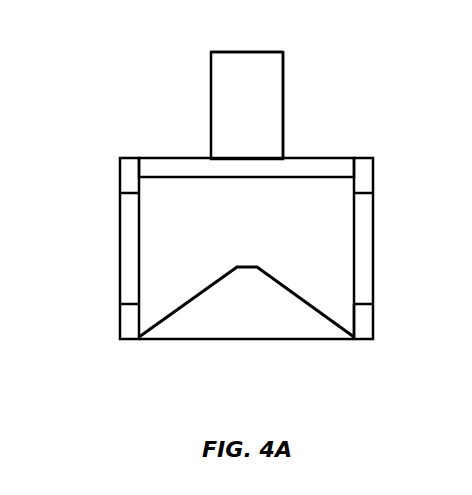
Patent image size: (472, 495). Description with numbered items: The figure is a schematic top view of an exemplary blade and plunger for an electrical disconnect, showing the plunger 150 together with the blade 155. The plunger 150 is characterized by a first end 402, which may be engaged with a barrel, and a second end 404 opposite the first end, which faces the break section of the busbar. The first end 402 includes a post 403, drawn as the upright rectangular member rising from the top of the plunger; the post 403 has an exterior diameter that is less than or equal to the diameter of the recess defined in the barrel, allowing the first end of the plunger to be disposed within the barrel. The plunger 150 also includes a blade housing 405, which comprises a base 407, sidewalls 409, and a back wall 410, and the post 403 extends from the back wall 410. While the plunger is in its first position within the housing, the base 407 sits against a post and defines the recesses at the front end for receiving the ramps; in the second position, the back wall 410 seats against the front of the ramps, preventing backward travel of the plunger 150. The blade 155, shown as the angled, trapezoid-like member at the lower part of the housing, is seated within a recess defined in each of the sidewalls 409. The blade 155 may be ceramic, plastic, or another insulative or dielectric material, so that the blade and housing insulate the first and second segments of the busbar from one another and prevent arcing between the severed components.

The plunger 150 is at (210, 145).
The blade 155 is at (183, 305).
The first end 402 is at (285, 52).
The post 403 is at (283, 98).
The second end 404 is at (370, 339).
The blade housing 405 is at (122, 250).
The base 407 is at (272, 339).
The sidewalls 409 is at (373, 251).
The back wall 410 is at (315, 157).